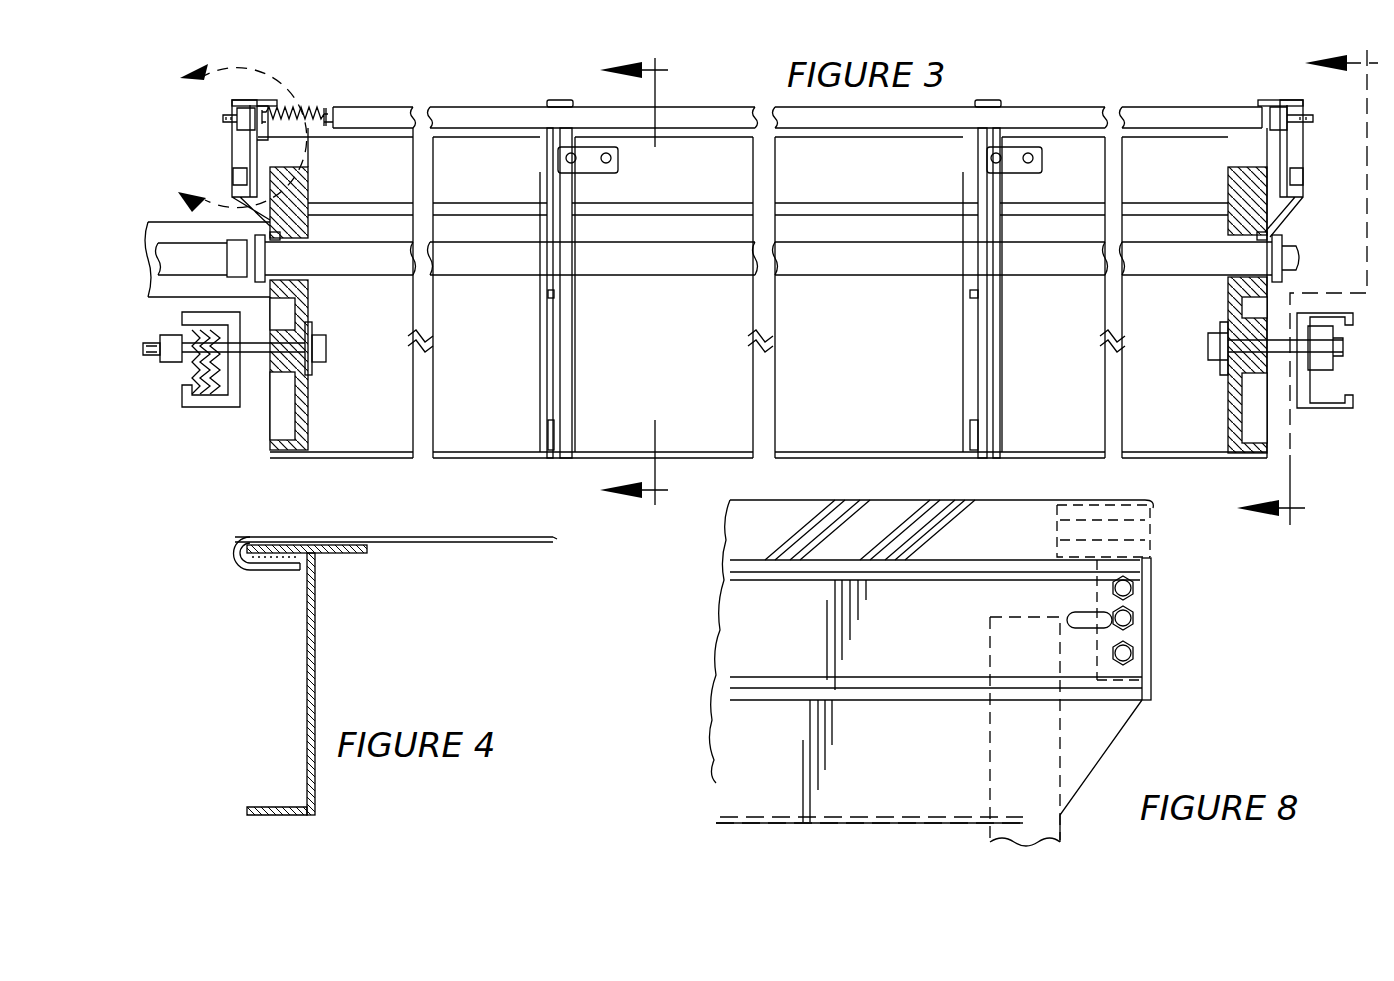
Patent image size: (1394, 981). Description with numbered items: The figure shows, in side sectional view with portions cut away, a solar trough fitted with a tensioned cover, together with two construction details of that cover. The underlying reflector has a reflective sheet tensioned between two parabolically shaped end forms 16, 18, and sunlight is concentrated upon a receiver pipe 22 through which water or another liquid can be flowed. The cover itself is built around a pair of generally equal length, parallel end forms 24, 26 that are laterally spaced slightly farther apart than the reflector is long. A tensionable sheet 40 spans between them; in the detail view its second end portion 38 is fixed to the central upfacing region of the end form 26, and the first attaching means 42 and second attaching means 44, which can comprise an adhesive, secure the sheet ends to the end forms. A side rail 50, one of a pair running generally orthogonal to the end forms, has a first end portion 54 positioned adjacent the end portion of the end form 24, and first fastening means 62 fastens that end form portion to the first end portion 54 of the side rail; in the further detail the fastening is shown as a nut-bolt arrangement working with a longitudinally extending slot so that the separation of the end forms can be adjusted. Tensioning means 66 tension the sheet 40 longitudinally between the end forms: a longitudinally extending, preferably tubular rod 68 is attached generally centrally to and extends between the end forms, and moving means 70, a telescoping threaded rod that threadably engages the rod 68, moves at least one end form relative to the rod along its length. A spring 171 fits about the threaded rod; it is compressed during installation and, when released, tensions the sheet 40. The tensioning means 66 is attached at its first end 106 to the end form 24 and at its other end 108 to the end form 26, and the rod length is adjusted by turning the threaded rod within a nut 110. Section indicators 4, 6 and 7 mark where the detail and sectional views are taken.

In FIG. 3, the section line 4- 4 is at (227, 138).
In FIG. 3, the section line 6- 6 is at (622, 282).
In FIG. 3, the section line 7- 7 is at (1295, 287).
In FIG. 3, the parabolic end form 16 is at (1222, 307).
In FIG. 8, the parabolic end form 16 is at (1073, 810).
In FIG. 3, the parabolic end form 18 is at (322, 305).
In FIG. 3, the receiver pipe 22 is at (805, 265).
In FIG. 3, the end form 24 is at (1270, 150).
In FIG. 3, the end form 26 is at (232, 157).
In FIG. 4, the end form 26 is at (298, 608).
In FIG. 4, the second end portion 38 is at (238, 535).
In FIG. 4, the tensionable sheet 40 is at (456, 528).
In FIG. 8, the tensionable sheet 40 is at (770, 495).
In FIG. 3, the first attaching means 42 is at (1287, 103).
In FIG. 4, the first attaching means 42 is at (268, 542).
In FIG. 3, the second attaching means 44 is at (255, 100).
In FIG. 4, the second attaching means 44 is at (317, 517).
In FIG. 8, the side rail 50 is at (703, 612).
In FIG. 8, the first end portion 54 is at (1135, 598).
In FIG. 8, the first fastening means 62 is at (1165, 612).
In FIG. 3, the tensioning means 66 is at (1053, 102).
In FIG. 3, the rod 68 is at (1003, 116).
In FIG. 3, the moving means 70 is at (303, 101).
In FIG. 3, the first end 106 is at (1252, 120).
In FIG. 3, the other end 108 is at (365, 112).
In FIG. 3, the nut 110 is at (250, 137).
In FIG. 3, the spring 171 is at (295, 137).